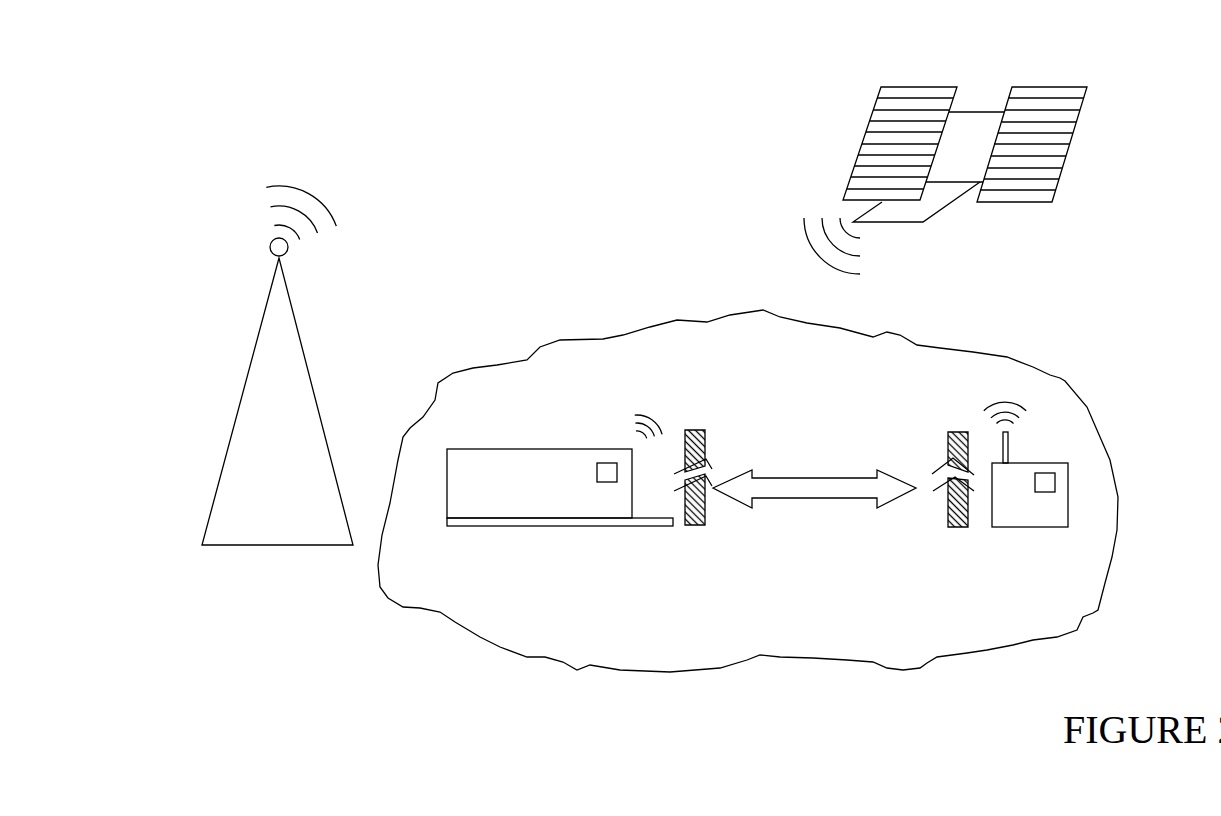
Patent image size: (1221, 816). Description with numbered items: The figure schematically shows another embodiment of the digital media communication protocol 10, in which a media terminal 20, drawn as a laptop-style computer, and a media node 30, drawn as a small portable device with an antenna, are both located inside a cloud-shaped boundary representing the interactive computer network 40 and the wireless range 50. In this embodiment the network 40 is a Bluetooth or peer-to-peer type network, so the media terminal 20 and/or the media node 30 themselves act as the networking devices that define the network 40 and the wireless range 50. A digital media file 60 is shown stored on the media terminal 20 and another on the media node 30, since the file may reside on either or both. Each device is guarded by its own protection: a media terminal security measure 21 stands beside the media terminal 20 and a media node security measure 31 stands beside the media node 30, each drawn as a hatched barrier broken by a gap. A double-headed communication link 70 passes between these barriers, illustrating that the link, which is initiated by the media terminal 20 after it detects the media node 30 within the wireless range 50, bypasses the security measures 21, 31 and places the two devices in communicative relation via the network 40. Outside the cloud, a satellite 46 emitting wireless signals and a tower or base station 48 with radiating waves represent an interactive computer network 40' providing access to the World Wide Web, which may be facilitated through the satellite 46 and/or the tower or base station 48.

The digital media communication protocol 10 is at (538, 134).
The media terminal 20 is at (563, 526).
The media terminal security measure 21 is at (692, 527).
The media node 30 is at (1033, 527).
The media node security measure 31 is at (958, 527).
The interactive computer network 40 is at (774, 482).
The interactive computer network with World Wide Web access 40' is at (775, 232).
The satellite 46 is at (1093, 161).
The tower or base station 48 is at (360, 294).
The wireless range 50 is at (1060, 378).
The digital media file 60 is at (597, 468).
The communication link 70 is at (820, 498).